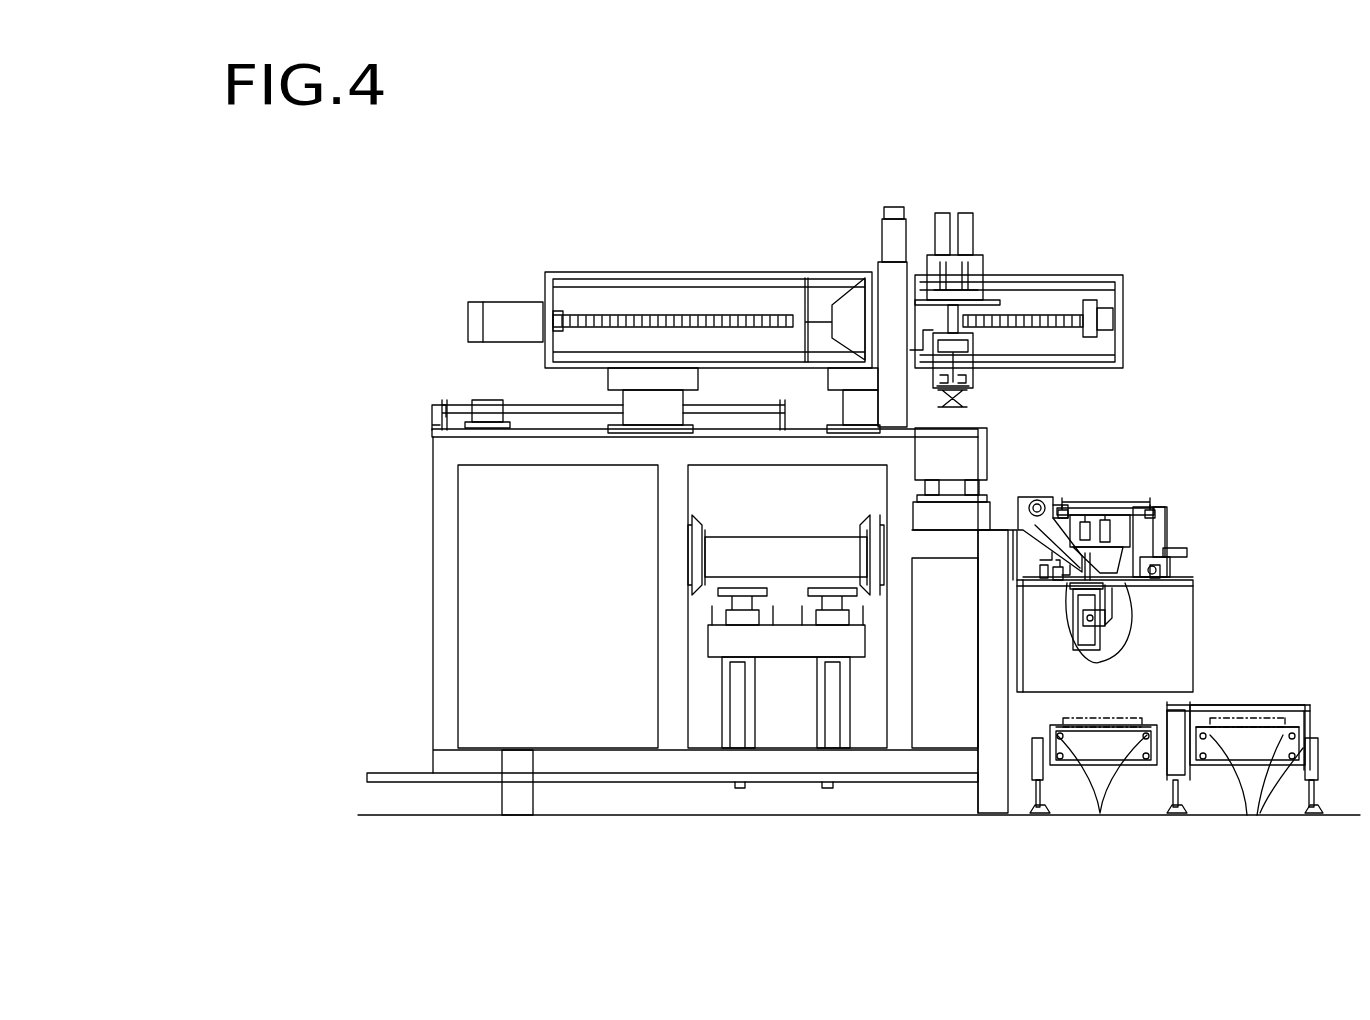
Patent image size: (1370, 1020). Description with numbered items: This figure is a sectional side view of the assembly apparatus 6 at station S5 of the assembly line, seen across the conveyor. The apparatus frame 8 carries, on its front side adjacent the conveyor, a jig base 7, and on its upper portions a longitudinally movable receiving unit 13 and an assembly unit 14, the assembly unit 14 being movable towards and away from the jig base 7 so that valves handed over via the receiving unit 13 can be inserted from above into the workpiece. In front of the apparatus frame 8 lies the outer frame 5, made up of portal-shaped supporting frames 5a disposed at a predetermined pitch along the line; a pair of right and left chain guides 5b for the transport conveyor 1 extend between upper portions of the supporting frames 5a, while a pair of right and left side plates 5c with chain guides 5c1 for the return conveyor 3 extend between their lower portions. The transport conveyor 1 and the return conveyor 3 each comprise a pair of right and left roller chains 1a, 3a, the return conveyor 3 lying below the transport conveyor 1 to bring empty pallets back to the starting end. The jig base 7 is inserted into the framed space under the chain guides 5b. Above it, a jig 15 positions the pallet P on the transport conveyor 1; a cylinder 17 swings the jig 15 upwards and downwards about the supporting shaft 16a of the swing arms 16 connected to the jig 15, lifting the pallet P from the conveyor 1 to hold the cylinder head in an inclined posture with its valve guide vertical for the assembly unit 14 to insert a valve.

The transport conveyor 1 is at (1108, 497).
The roller chains 1a is at (1145, 502).
The return conveyor 3 is at (1117, 712).
The roller chains 3a is at (1055, 740).
The outer frame 5 is at (1313, 703).
The supporting frames 5a is at (1267, 706).
The chain guides 5b is at (1064, 512).
The side plates 5c is at (1050, 748).
The chain guides 5c1 is at (1180, 796).
The assembly apparatus 6 is at (582, 227).
The jig base 7 is at (1188, 584).
The apparatus frame 8 is at (440, 504).
The receiving unit 13 is at (976, 427).
The assembly unit 14 is at (977, 255).
The jig 15 is at (1130, 497).
The swing arms 16 is at (1035, 548).
The supporting shaft 16a is at (1038, 498).
The cylinder 17 is at (1075, 600).
The pallet P is at (1112, 498).
The station S5 is at (721, 158).